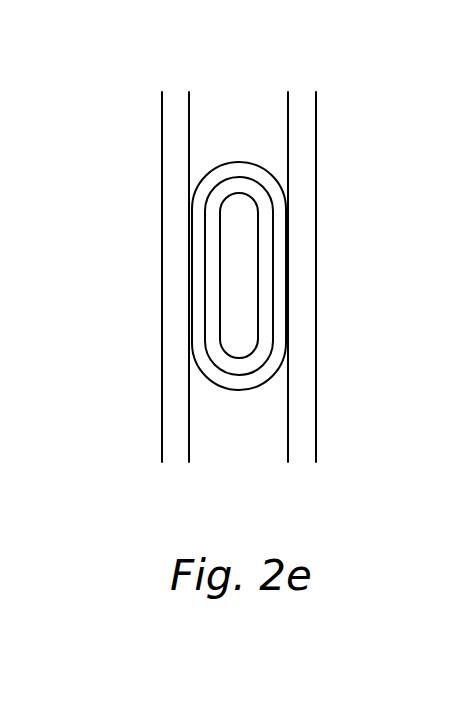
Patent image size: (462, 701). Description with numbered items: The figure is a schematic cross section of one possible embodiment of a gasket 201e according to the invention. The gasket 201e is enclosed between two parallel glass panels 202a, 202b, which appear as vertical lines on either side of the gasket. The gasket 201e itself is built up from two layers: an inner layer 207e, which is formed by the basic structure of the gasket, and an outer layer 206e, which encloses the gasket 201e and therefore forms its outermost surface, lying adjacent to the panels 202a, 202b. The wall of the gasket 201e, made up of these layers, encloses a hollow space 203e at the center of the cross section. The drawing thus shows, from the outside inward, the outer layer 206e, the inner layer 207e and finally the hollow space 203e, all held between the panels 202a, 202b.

The gasket 201e is at (169, 215).
The panel 202a is at (177, 427).
The panel 202b is at (302, 426).
The hollow space 203e is at (242, 310).
The outer layer 206e is at (198, 225).
The inner layer 207e is at (213, 267).